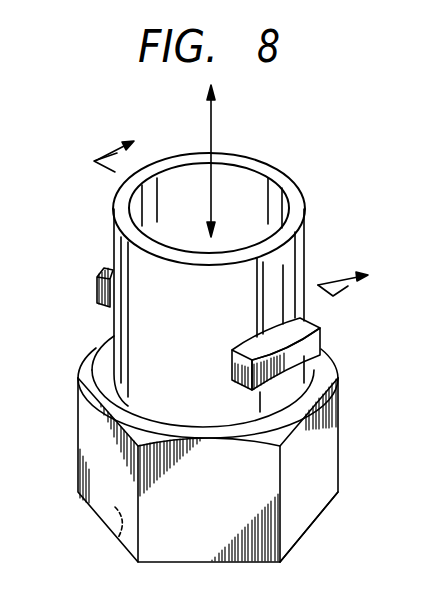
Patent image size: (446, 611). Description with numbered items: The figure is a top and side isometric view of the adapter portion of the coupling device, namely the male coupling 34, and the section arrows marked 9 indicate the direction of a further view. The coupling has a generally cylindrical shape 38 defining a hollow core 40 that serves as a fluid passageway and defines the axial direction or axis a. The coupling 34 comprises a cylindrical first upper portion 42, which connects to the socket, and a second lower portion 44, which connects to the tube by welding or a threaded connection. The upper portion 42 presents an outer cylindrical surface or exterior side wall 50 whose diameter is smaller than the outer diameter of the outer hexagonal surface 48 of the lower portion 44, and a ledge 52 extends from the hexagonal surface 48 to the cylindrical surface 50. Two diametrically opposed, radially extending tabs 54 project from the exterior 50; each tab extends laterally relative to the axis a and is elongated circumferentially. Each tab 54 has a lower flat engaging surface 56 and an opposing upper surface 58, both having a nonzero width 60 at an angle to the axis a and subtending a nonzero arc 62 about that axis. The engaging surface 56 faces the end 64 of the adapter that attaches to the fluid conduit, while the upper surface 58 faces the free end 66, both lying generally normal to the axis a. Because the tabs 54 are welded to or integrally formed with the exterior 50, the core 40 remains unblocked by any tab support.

The male coupling 34 is at (337, 113).
The axis a is at (211, 121).
The section view direction 9 is at (239, 204).
The outer cylindrical surface 50 is at (171, 366).
The free end 66 is at (267, 173).
The hollow core 40 is at (280, 214).
The first upper portion 42 is at (120, 315).
The tabs 54 is at (102, 259).
The upper surface 58 is at (312, 319).
The widths 60 is at (233, 350).
The arc 62 is at (253, 347).
The lower flat engaging surface 56 is at (240, 393).
The ledge 52 is at (90, 370).
The outer hexagonal surface 48 is at (224, 512).
The second lower portion 44 is at (332, 450).
The end 64 is at (317, 513).
The generally cylindrical shape 38 is at (122, 532).